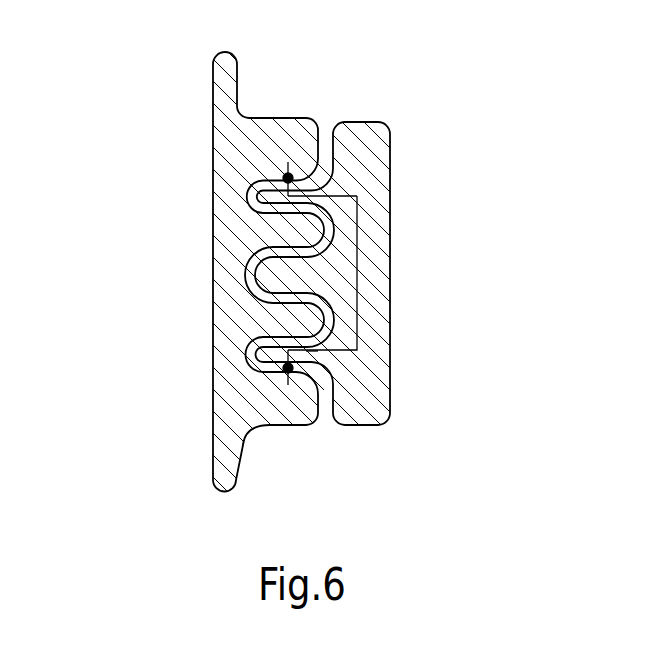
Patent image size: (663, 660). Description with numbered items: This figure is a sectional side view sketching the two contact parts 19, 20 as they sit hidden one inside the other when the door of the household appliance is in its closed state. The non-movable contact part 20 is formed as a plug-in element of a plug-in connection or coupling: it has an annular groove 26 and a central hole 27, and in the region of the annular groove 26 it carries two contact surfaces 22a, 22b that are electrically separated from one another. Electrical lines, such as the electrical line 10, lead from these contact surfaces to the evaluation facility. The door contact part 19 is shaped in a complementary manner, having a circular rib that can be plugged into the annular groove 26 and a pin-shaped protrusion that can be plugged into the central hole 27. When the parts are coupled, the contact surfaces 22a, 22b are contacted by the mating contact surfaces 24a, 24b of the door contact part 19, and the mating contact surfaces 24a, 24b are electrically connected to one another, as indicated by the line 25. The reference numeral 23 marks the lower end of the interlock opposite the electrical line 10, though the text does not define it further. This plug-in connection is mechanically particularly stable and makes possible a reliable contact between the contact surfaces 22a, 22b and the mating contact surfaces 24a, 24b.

The electrical line 10 is at (288, 162).
The door contact part 19 is at (365, 147).
The non-movable contact part 20 is at (240, 142).
The contact surface 22a is at (398, 200).
The mating contact surface 24a is at (313, 187).
The contact surface 22b is at (408, 299).
The mating contact surface 24b is at (306, 351).
The end of serpentine gap 23 is at (288, 385).
The line 25 is at (357, 350).
The annular groove 26 is at (243, 195).
The central hole 27 is at (243, 272).